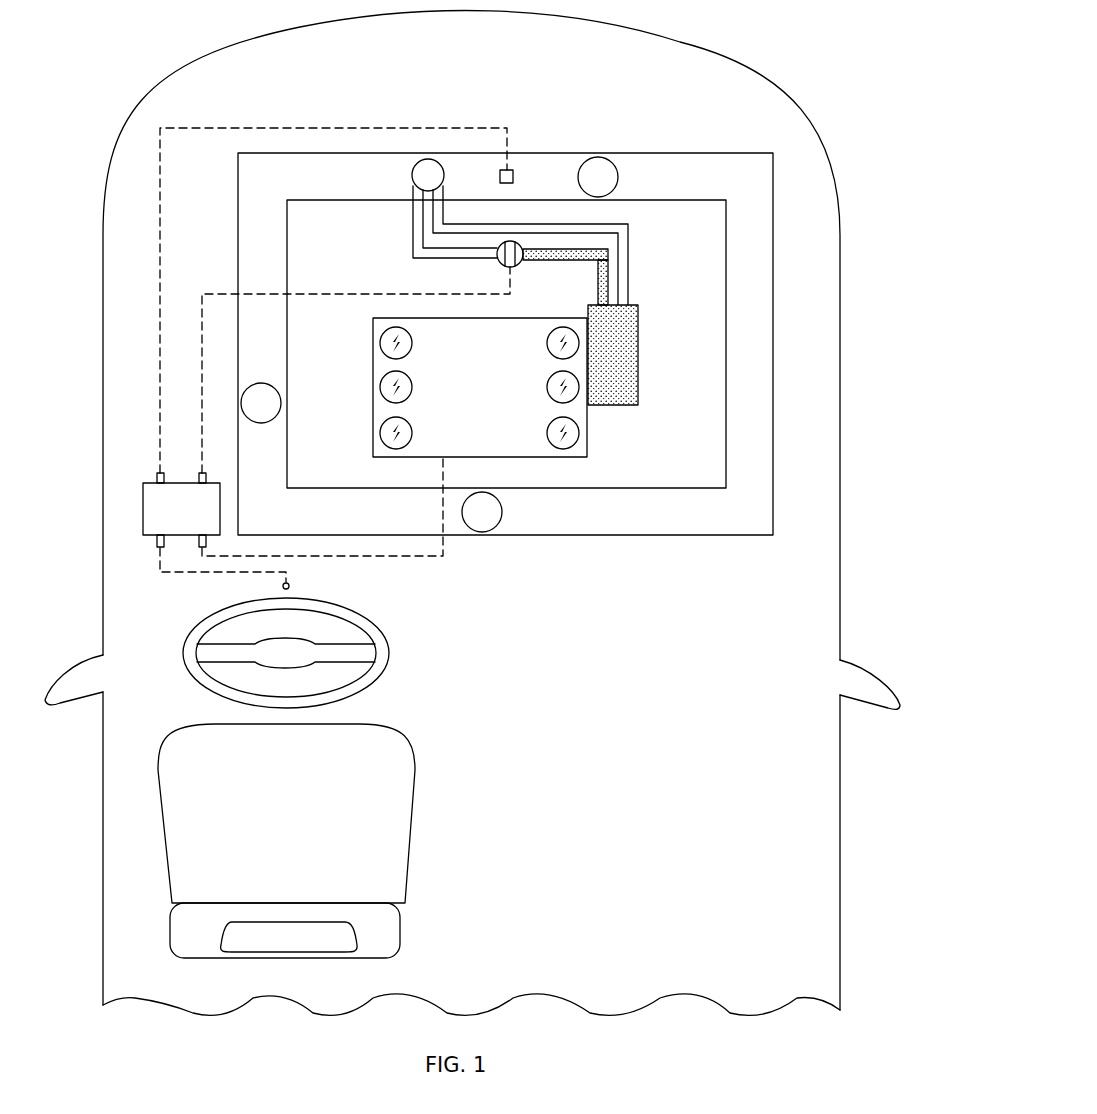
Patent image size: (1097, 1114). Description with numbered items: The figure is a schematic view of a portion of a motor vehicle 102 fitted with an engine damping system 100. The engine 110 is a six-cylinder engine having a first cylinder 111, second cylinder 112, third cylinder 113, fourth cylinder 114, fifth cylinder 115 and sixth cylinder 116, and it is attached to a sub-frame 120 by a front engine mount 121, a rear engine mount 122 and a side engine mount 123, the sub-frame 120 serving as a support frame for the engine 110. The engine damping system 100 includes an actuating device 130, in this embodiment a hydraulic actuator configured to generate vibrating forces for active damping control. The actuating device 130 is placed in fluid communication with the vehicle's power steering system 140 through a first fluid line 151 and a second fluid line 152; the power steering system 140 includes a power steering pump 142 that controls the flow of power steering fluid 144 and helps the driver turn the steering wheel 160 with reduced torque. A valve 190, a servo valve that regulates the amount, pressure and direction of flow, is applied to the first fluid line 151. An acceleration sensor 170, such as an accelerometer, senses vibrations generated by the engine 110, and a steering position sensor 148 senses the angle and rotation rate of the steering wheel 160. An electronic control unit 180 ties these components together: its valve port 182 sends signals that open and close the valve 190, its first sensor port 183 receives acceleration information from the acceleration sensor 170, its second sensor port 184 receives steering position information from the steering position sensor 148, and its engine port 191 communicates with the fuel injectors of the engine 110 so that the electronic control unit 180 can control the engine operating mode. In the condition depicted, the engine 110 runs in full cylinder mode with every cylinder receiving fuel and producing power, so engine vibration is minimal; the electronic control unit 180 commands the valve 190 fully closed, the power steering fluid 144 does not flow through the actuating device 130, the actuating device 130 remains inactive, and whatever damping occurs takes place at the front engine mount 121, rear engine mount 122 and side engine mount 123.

The engine damping system 100 is at (535, 96).
The motor vehicle 102 is at (751, 70).
The engine 110 is at (373, 439).
The first cylinder 111 is at (412, 344).
The second cylinder 112 is at (412, 388).
The third cylinder 113 is at (412, 434).
The fourth cylinder 114 is at (547, 343).
The fifth cylinder 115 is at (547, 387).
The sixth cylinder 116 is at (547, 433).
The sub-frame 120 is at (716, 153).
The front engine mount 121 is at (619, 181).
The rear engine mount 122 is at (502, 512).
The side engine mount 123 is at (268, 388).
The actuating device 130 is at (421, 179).
The power steering system 140 is at (652, 330).
The power steering pump 142 is at (640, 354).
The power steering fluid 144 is at (618, 397).
The steering position sensor 148 is at (291, 586).
The first fluid line 151 is at (413, 240).
The second fluid line 152 is at (628, 228).
The steering wheel 160 is at (389, 657).
The acceleration sensor 170 is at (513, 171).
The electronic control unit 180 is at (181, 529).
The valve port 182 is at (208, 478).
The first sensor port 183 is at (157, 478).
The second sensor port 184 is at (150, 540).
The valve 190 is at (520, 265).
The engine port 191 is at (198, 550).